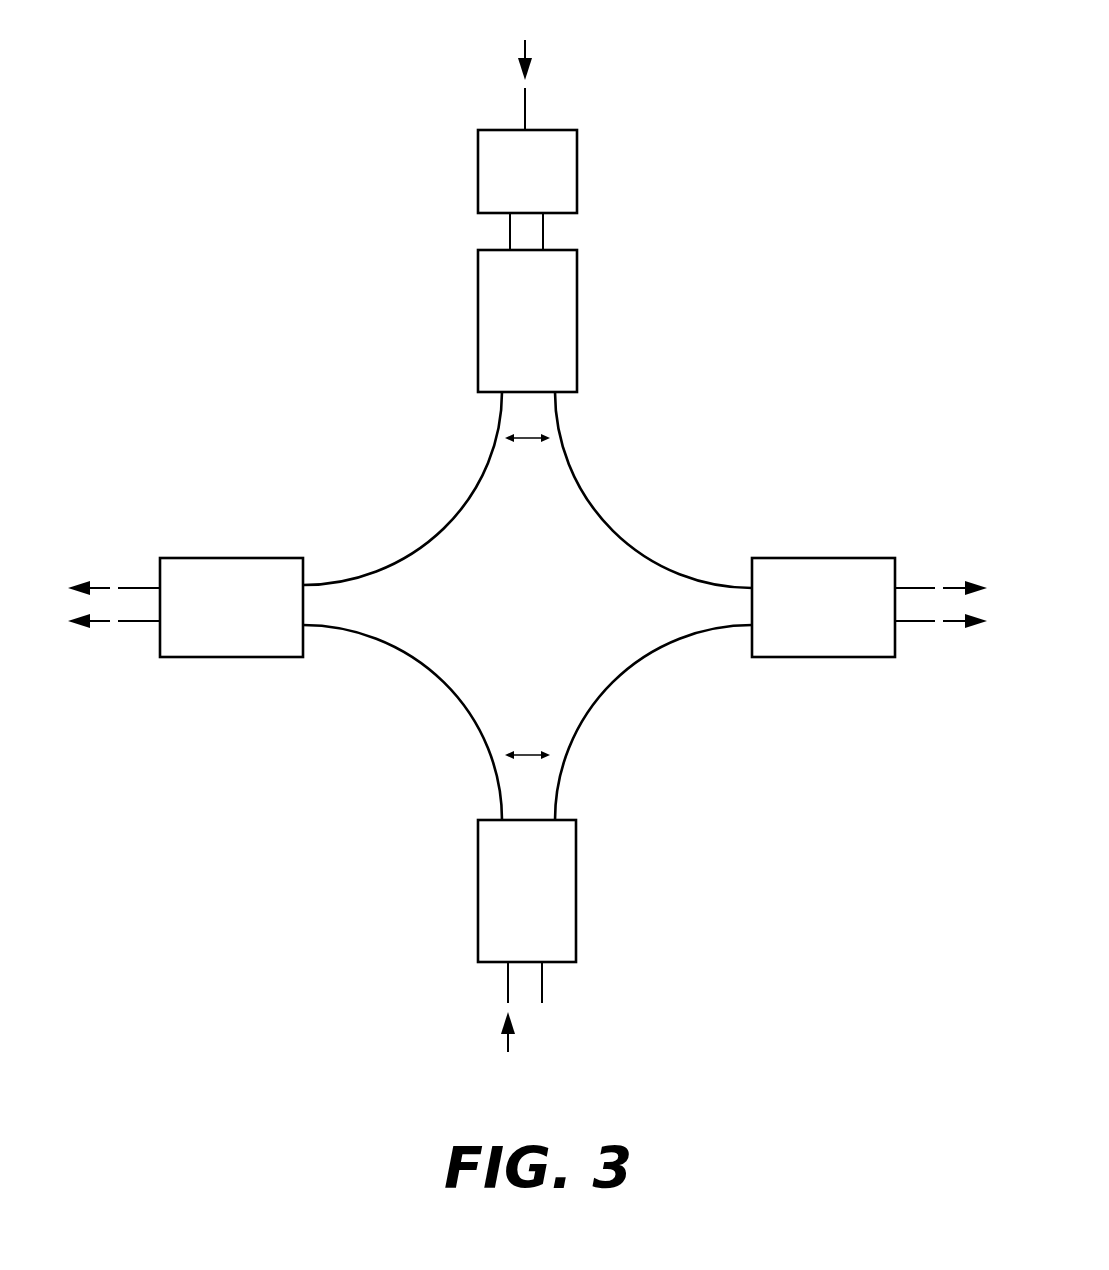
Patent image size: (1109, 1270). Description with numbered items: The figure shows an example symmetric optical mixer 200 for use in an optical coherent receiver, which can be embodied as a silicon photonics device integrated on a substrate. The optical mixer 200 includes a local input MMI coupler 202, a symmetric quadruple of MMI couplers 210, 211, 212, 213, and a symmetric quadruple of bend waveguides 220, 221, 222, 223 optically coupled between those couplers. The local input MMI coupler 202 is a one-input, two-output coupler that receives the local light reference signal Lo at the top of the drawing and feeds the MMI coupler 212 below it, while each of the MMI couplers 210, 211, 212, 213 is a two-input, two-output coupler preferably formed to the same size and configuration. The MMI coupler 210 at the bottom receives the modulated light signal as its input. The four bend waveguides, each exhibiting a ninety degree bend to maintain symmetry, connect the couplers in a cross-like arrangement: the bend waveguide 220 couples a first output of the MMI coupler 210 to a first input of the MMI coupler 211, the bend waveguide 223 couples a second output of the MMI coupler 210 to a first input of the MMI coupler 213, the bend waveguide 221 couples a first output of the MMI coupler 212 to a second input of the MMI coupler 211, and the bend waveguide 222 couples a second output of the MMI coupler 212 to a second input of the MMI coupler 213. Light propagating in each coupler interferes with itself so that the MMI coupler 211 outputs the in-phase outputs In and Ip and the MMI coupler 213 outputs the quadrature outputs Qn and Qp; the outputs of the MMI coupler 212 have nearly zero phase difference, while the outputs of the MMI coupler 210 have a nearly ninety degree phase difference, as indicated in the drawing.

The symmetric optical mixer 200 is at (244, 319).
The local input MMI coupler 202 is at (527, 171).
The MMI coupler 210 is at (527, 891).
The MMI coupler 211 is at (823, 607).
The MMI coupler 212 is at (527, 321).
The MMI coupler 213 is at (231, 607).
The bend waveguide 220 is at (615, 678).
The bend waveguide 221 is at (620, 537).
The bend waveguide 222 is at (437, 536).
The bend waveguide 223 is at (440, 680).